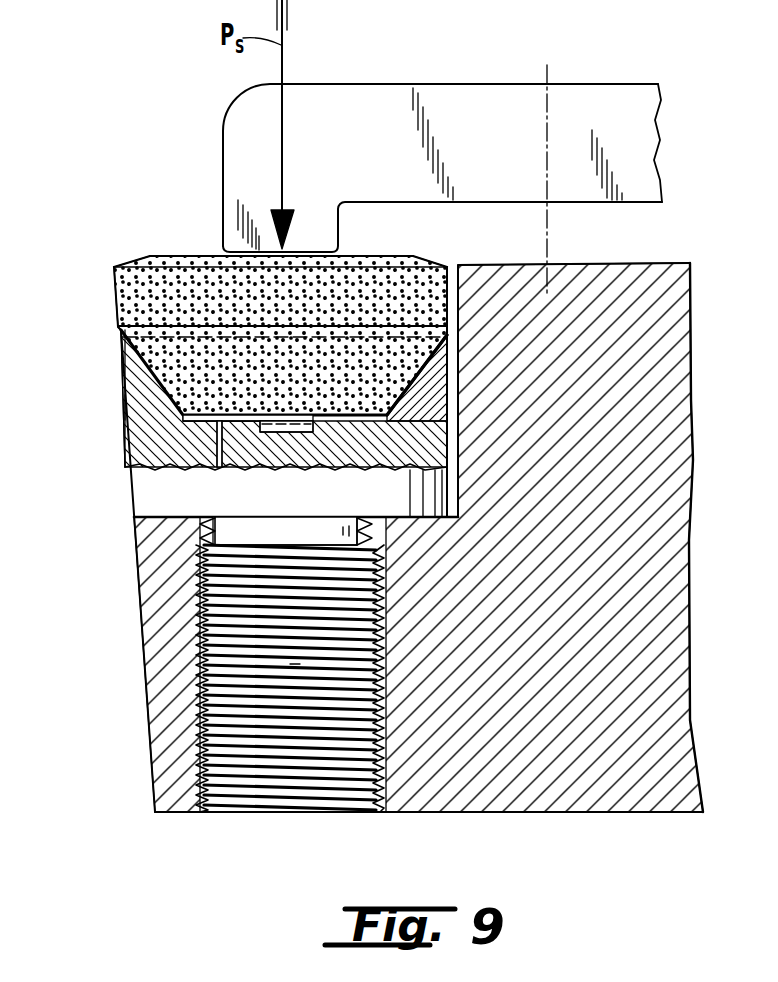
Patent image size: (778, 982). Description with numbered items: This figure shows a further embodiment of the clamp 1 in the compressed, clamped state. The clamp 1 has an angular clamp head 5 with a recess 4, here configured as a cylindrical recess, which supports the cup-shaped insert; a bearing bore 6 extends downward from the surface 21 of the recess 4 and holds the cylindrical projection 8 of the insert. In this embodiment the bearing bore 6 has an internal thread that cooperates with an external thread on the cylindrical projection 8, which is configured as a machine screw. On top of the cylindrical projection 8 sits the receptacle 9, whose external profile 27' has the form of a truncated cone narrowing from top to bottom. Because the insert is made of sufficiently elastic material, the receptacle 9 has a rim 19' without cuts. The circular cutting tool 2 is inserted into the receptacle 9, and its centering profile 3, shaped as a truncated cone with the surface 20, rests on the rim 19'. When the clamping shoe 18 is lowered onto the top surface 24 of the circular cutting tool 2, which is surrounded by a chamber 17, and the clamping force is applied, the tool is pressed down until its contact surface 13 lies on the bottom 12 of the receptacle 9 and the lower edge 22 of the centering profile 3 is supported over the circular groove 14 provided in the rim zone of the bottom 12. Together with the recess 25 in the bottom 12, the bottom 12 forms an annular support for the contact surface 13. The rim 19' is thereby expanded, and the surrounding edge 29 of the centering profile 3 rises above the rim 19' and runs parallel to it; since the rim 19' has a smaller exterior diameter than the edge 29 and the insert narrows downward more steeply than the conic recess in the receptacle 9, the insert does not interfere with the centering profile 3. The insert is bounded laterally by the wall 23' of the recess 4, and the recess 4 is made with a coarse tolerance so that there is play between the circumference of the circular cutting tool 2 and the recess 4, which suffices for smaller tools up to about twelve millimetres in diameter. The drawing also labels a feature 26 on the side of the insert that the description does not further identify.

The clamp 1 is at (690, 218).
The circular cutting tool 2 is at (104, 283).
The centering profile 3 is at (422, 407).
The recess 4 is at (458, 363).
The angular clamp head 5 is at (160, 665).
The bearing bore 6 is at (302, 812).
The cylindrical projection 8 is at (232, 600).
The receptacle 9 is at (410, 363).
The bottom 12 is at (248, 413).
The contact surface 13 is at (220, 468).
The circular groove 14 is at (135, 460).
The chamber 17 is at (140, 257).
The clamping shoe 18 is at (240, 135).
The rim 19' is at (282, 311).
The surface 20 is at (143, 373).
The surface 21 is at (160, 512).
The lower edge 22 is at (187, 414).
The ring 23' is at (438, 527).
The top surface 24 is at (205, 255).
The recess 25 is at (290, 432).
The side wall 26 is at (125, 405).
The external profile 27' is at (88, 399).
The surrounding edge 29 is at (118, 327).